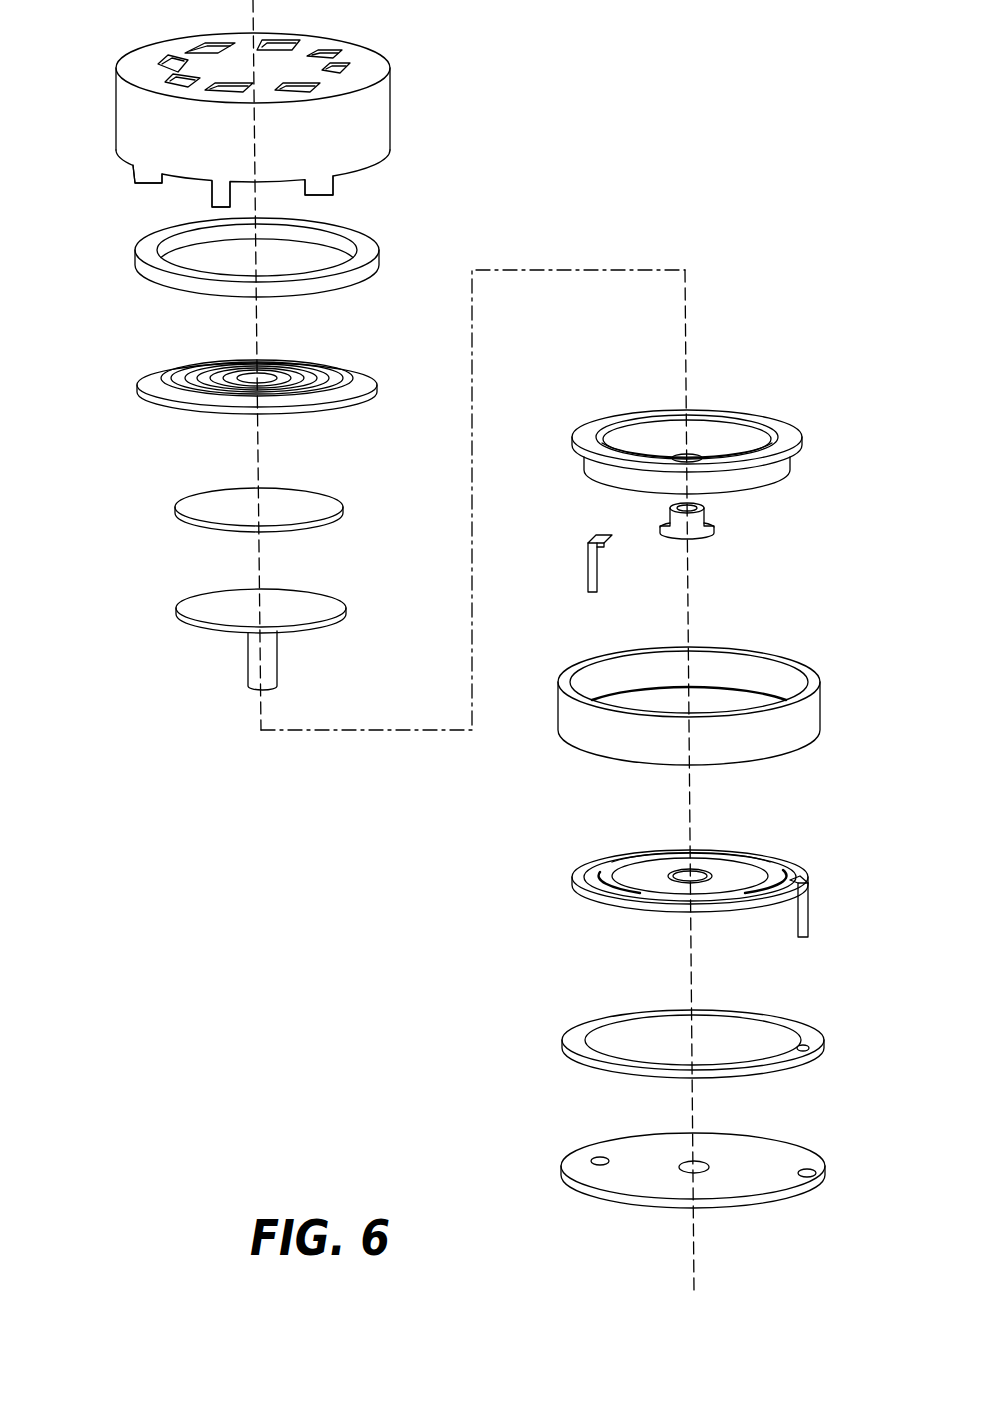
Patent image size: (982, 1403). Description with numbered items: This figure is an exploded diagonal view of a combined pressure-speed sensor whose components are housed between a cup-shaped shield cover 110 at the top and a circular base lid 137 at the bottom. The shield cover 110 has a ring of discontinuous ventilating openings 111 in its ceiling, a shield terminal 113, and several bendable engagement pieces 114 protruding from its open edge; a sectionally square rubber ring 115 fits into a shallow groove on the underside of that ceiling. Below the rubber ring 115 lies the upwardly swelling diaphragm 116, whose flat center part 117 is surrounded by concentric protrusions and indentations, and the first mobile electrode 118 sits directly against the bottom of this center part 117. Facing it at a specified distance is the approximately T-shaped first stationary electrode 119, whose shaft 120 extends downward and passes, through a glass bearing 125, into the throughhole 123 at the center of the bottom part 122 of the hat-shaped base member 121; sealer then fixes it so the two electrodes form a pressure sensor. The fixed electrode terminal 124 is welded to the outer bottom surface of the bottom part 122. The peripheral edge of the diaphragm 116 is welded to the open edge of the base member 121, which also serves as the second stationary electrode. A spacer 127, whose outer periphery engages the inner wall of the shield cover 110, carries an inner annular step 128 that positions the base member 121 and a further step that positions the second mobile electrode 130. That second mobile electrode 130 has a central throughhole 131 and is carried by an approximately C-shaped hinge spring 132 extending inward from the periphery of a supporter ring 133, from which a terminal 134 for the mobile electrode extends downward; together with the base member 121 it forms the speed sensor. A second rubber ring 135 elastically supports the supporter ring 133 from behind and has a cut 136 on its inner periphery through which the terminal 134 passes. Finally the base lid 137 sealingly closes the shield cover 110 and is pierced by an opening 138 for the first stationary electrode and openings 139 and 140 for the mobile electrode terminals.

The shield cover 110 is at (377, 106).
The ventilating openings 111 is at (172, 62).
The shield terminal 113 is at (215, 195).
The bendable engagement pieces 114 is at (133, 173).
The rubber ring 115 is at (363, 250).
The diaphragm 116 is at (362, 390).
The center part 117 is at (253, 375).
The first mobile electrode 118 is at (328, 507).
The first stationary electrode 119 is at (323, 605).
The shaft 120 is at (275, 670).
The base member 121 is at (587, 435).
The bottom part 122 is at (743, 450).
The throughhole 123 is at (687, 458).
The fixed electrode terminal 124 is at (588, 572).
The bearing 125 is at (702, 517).
The spacer 127 is at (575, 725).
The annular step 128 is at (763, 690).
The second mobile electrode 130 is at (643, 852).
The throughhole 131 is at (693, 875).
The hinge spring 132 is at (777, 858).
The supporter ring 133 is at (577, 877).
The terminal 134 is at (798, 927).
The rubber ring 135 is at (577, 1047).
The cut 136 is at (805, 1047).
The base lid 137 is at (643, 1150).
The opening 138 is at (703, 1163).
The opening 139 is at (597, 1158).
The opening 140 is at (803, 1167).